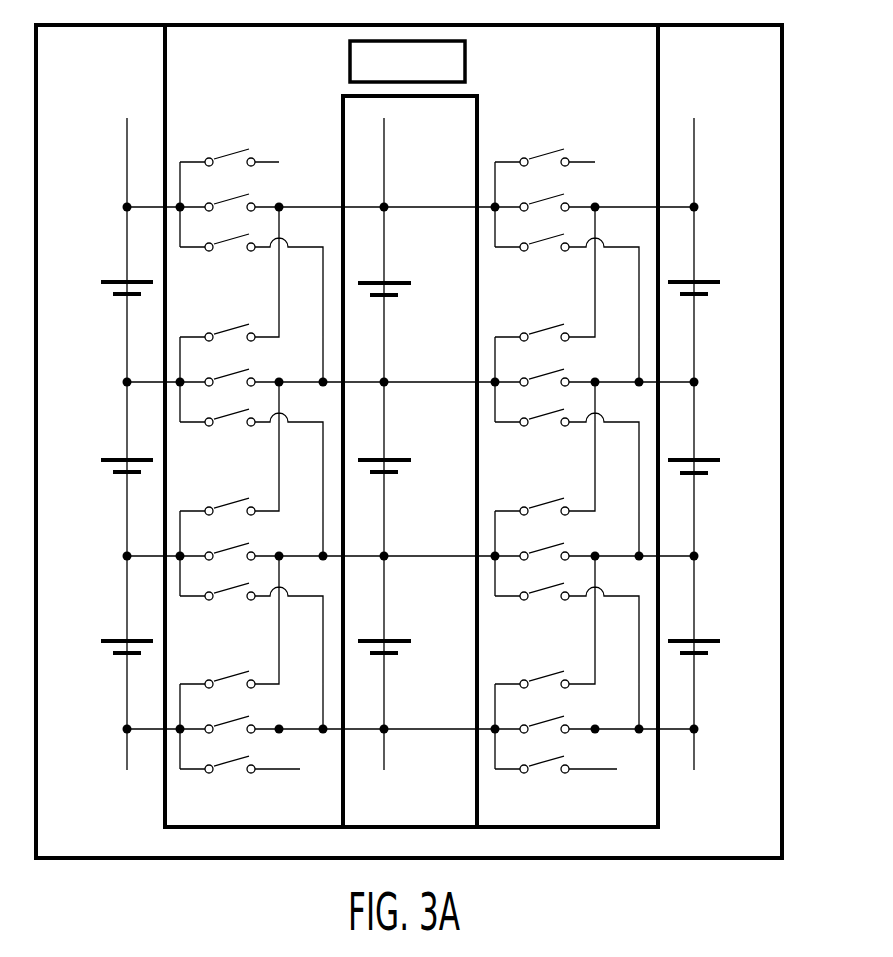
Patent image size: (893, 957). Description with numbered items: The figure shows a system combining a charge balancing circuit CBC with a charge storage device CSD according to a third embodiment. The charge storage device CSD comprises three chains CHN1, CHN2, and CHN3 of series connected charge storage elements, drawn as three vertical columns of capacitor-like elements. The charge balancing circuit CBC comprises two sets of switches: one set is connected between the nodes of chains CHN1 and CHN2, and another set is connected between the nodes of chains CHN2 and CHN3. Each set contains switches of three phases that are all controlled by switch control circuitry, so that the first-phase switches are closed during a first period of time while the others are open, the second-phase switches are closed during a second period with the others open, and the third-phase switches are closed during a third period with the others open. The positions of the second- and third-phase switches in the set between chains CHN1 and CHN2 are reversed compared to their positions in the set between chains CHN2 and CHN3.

The charge storage device CSD is at (101, 387).
The charge balancing circuit CBC is at (615, 387).
The first chain of series connected charge storage elements CHN1 is at (127, 768).
The second chain of series connected charge storage elements CHN2 is at (384, 768).
The third chain of charge storage elements CHN3 is at (697, 768).